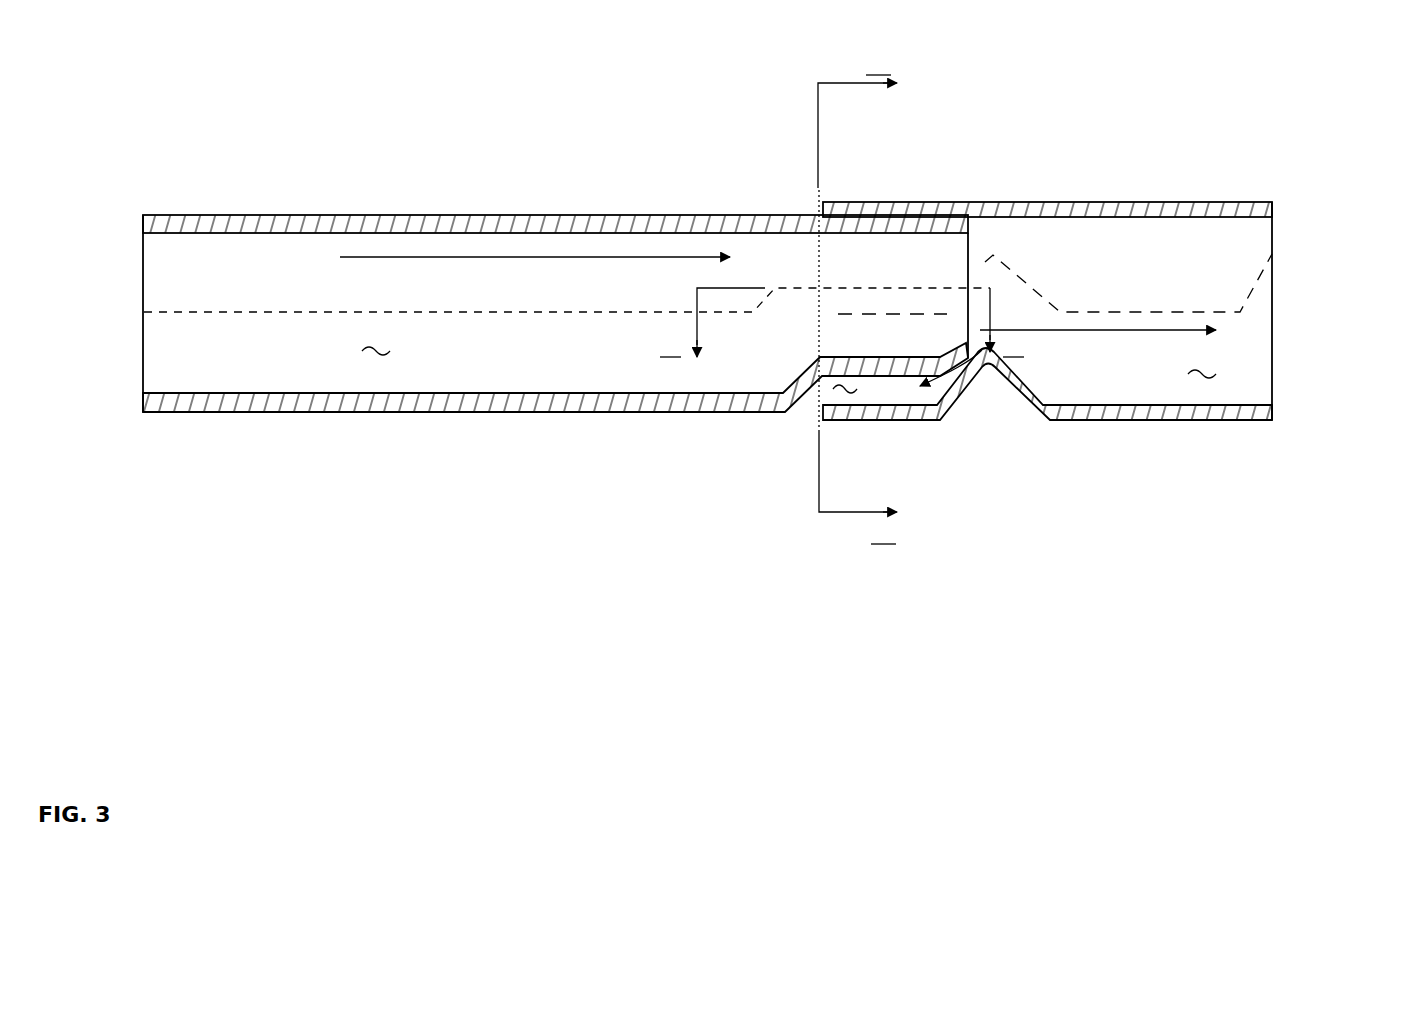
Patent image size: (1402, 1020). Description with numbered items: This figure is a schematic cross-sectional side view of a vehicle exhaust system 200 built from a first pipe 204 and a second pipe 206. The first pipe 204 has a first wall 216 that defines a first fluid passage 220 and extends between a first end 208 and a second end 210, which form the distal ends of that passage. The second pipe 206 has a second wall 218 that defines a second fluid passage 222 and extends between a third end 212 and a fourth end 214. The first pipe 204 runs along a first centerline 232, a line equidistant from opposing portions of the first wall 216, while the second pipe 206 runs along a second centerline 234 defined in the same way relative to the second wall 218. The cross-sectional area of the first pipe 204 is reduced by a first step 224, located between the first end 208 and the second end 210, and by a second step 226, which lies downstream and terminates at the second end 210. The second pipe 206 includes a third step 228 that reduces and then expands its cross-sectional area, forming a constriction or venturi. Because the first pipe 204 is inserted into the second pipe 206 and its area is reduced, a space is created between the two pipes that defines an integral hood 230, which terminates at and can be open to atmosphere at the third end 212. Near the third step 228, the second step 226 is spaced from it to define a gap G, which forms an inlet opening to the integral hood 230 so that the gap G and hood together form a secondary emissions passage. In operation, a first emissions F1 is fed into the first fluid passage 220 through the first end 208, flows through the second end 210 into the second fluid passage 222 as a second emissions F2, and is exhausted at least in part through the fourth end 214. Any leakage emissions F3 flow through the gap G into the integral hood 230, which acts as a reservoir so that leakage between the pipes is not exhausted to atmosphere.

The duct assembly 200 is at (215, 110).
The first pipe 204 is at (173, 420).
The second pipe 206 is at (1252, 428).
The first end 208 is at (143, 357).
The second end 210 is at (968, 243).
The third end 212 is at (822, 398).
The fourth end 214 is at (1273, 348).
The first wall 216 is at (495, 216).
The second wall 218 is at (1211, 202).
The first fluid passage 220 is at (368, 366).
The second fluid passage 222 is at (1202, 383).
The first step 224 is at (797, 380).
The second step 226 is at (947, 350).
The third step 228 is at (1040, 408).
The integral hood 230 is at (820, 430).
The first centerline 232 is at (195, 312).
The second centerline 234 is at (1272, 254).
The first emissions F1 is at (627, 252).
The second emissions F2 is at (1108, 336).
The leakage emissions F3 is at (942, 389).
The gap G is at (972, 362).